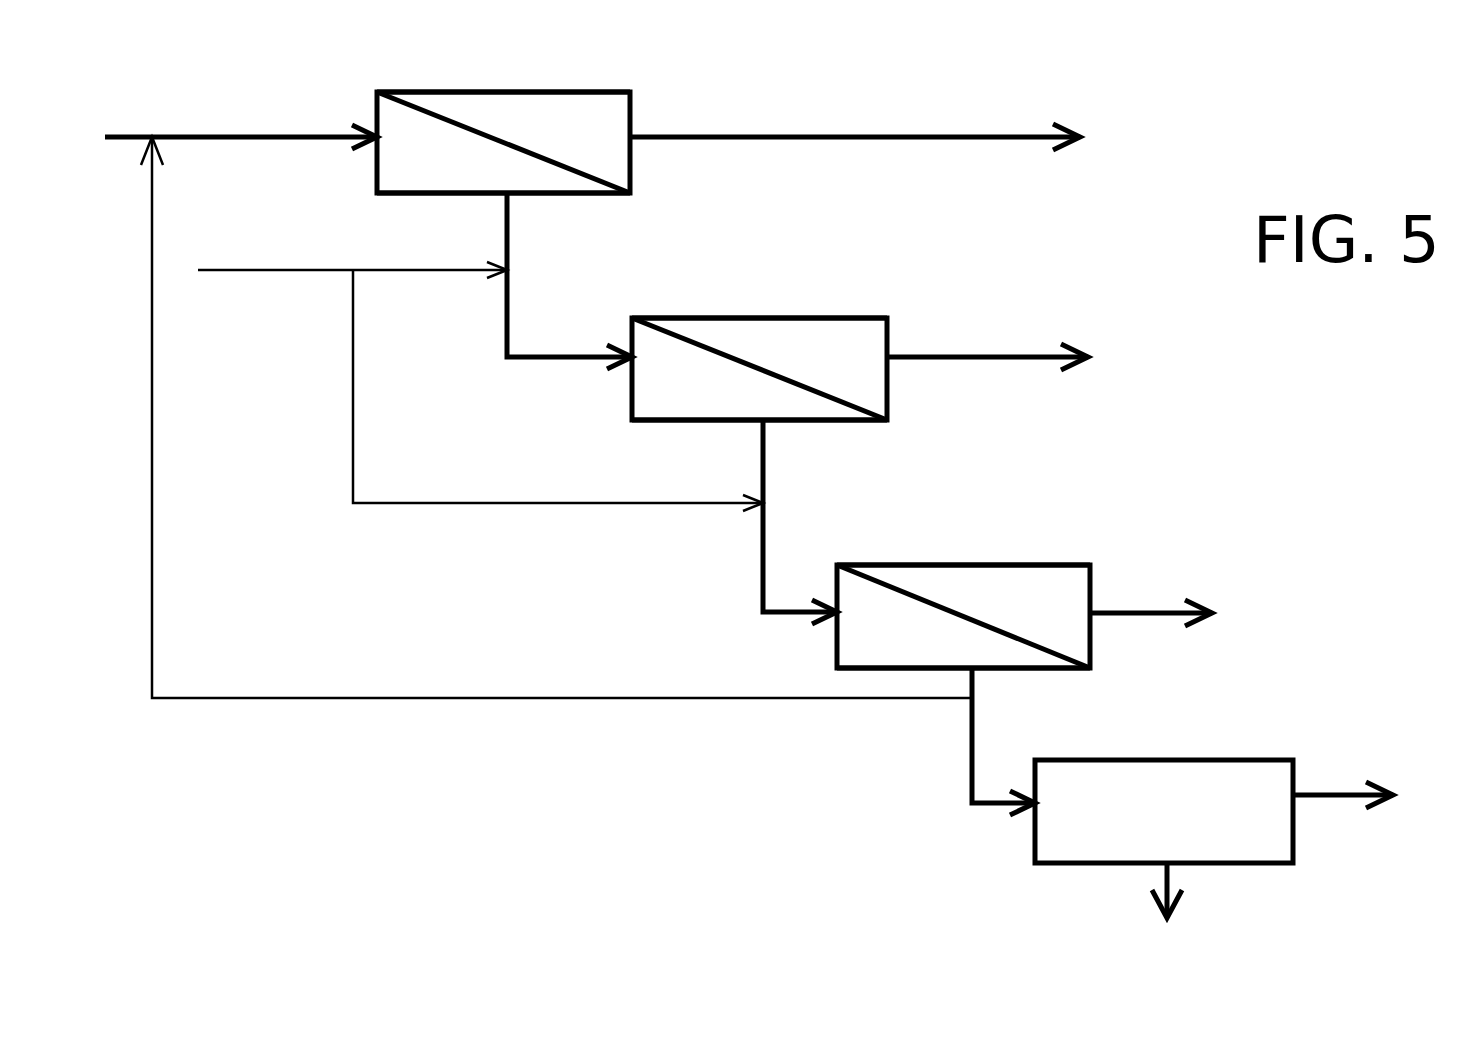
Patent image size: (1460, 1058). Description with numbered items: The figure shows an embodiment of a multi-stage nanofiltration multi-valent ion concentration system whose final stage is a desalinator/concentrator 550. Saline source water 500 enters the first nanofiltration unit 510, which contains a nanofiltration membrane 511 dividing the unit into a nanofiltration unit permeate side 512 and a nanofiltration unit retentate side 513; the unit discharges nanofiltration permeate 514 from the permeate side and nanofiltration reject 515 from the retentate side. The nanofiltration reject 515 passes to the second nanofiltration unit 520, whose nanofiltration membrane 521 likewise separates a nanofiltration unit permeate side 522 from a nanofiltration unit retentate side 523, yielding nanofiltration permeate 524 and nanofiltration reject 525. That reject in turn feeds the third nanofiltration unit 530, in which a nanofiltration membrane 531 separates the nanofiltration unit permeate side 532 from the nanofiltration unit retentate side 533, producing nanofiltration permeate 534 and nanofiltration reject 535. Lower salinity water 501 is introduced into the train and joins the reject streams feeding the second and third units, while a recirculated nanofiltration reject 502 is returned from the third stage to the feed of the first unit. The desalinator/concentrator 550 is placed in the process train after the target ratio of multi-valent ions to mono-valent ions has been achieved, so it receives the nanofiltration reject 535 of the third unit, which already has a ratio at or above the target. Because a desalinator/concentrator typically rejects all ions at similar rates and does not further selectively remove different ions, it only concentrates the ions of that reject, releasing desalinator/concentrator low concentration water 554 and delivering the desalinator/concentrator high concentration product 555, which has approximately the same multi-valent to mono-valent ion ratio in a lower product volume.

The saline source water 500 is at (143, 130).
The lower salinity water 501 is at (275, 268).
The recirculated nanofiltration reject 502 is at (318, 696).
The nanofiltration unit 510 is at (445, 90).
The nanofiltration membrane 511 is at (520, 143).
The nanofiltration unit permeate side 512 is at (528, 115).
The nanofiltration unit retentate side 513 is at (423, 158).
The nanofiltration permeate 514 is at (780, 132).
The nanofiltration reject 515 is at (510, 237).
The nanofiltration unit 520 is at (720, 317).
The nanofiltration membrane 521 is at (790, 378).
The nanofiltration unit permeate side 522 is at (773, 333).
The nanofiltration unit retentate side 523 is at (677, 393).
The nanofiltration permeate 524 is at (955, 353).
The nanofiltration reject 525 is at (766, 463).
The nanofiltration unit 530 is at (905, 564).
The nanofiltration membrane 531 is at (995, 626).
The nanofiltration unit permeate side 532 is at (968, 587).
The nanofiltration unit retentate side 533 is at (875, 632).
The nanofiltration permeate 534 is at (1133, 608).
The nanofiltration reject 535 is at (976, 703).
The desalinator/concentrator 550 is at (1097, 759).
The desalinator/concentrator low concentration water 554 is at (1322, 790).
The desalinator/concentrator high concentration product 555 is at (1170, 873).